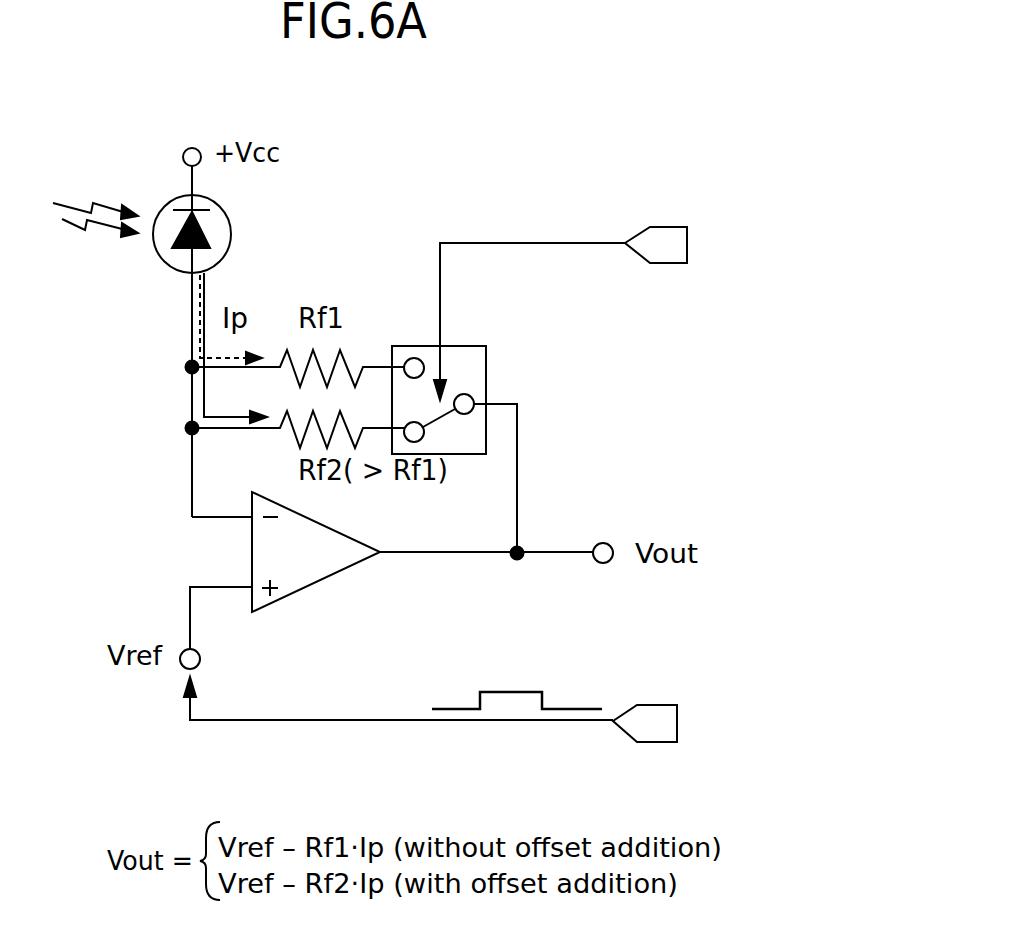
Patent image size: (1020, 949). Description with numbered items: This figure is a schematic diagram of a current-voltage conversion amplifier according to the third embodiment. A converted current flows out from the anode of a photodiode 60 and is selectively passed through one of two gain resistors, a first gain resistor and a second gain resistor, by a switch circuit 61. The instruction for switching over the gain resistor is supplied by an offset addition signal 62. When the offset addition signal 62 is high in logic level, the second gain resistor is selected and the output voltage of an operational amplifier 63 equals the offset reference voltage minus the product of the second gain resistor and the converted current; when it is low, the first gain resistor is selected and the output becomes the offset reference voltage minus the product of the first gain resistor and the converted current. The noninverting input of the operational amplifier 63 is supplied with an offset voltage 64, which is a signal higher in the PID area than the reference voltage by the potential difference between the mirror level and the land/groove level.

The photodiode 60 is at (240, 233).
The switch circuit 61 is at (492, 365).
The offset addition signal 62 is at (490, 237).
The operational amplifier 63 is at (323, 582).
The offset voltage 64 is at (338, 725).